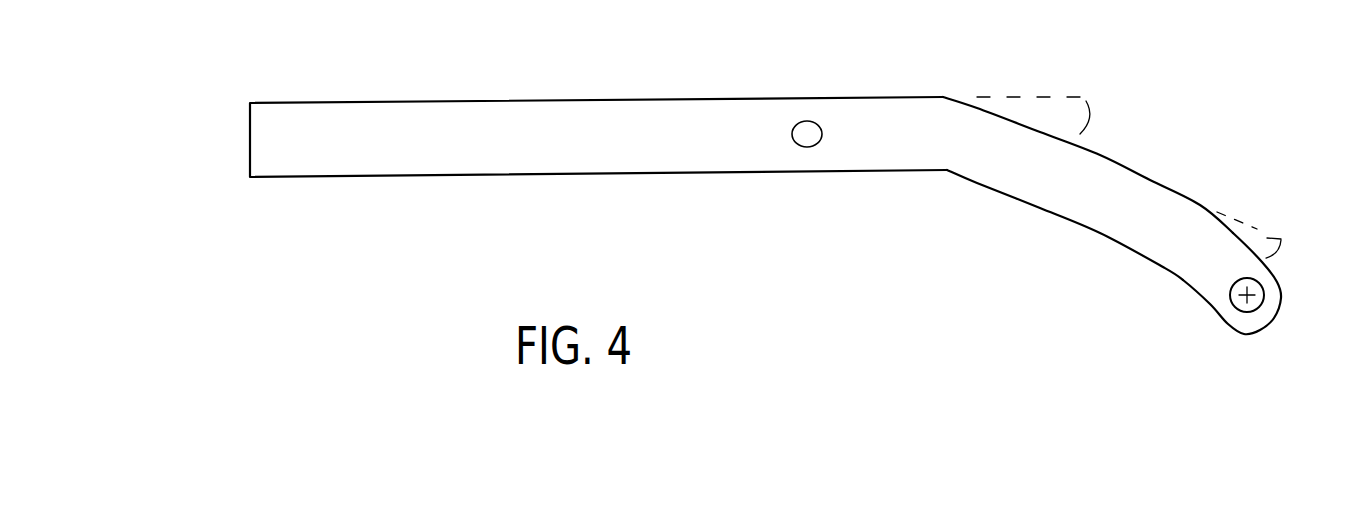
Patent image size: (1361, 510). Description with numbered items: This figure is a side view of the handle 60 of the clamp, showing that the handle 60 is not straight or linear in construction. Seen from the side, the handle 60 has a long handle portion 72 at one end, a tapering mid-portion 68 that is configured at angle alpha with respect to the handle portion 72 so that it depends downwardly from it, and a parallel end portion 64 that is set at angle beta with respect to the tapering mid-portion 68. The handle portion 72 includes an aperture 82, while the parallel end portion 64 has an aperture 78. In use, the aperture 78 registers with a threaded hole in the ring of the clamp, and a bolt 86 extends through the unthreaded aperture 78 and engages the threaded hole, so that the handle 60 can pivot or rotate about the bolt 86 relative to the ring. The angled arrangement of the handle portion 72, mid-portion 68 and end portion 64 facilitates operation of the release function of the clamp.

The handle 60 is at (345, 66).
The handle portion 72 is at (428, 160).
The aperture 82 is at (805, 148).
The tapering mid-portion 68 is at (1065, 210).
The parallel end portion 64 is at (1208, 295).
The aperture 78 is at (1255, 307).
The bolt 86 is at (1255, 288).